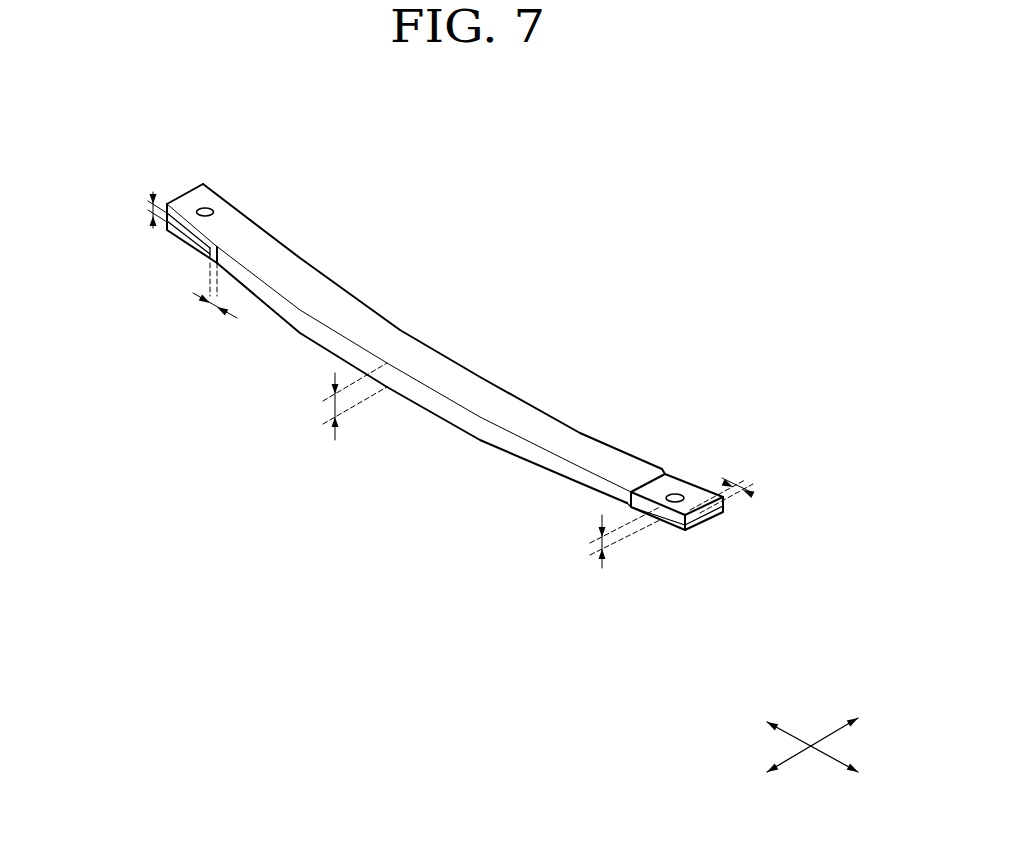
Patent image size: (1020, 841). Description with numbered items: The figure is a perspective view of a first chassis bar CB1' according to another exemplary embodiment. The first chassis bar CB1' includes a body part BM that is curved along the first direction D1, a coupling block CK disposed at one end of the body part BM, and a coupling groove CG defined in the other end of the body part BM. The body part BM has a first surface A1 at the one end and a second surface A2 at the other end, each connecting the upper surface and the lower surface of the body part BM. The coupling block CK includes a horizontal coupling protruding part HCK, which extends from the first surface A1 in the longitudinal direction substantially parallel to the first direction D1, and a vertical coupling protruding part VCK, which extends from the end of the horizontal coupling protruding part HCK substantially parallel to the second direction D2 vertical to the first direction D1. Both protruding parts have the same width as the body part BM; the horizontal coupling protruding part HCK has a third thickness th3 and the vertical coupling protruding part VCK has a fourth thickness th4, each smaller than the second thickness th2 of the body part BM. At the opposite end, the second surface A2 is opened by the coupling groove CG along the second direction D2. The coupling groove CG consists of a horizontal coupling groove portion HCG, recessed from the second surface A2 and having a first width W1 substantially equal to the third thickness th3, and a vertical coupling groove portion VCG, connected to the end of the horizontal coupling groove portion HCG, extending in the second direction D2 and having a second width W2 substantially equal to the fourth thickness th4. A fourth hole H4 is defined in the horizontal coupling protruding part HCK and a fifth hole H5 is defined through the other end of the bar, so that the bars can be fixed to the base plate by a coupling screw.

The first chassis bar CB1' is at (413, 403).
The body part BM is at (438, 367).
The first surface A1 is at (653, 480).
The second surface A2 is at (185, 193).
The fourth hole H4 is at (675, 494).
The fifth hole H5 is at (207, 207).
The coupling groove CG is at (99, 239).
The horizontal coupling groove portion HCG is at (172, 229).
The vertical coupling groove portion VCG is at (195, 252).
The coupling block CK is at (738, 620).
The horizontal coupling protruding part HCK is at (667, 525).
The vertical coupling protruding part VCK is at (700, 521).
The first width W1 is at (143, 210).
The second width W2 is at (213, 314).
The second thickness th2 is at (335, 401).
The third thickness th3 is at (605, 537).
The fourth thickness th4 is at (731, 484).
The first direction D1 is at (826, 760).
The second direction D2 is at (826, 736).